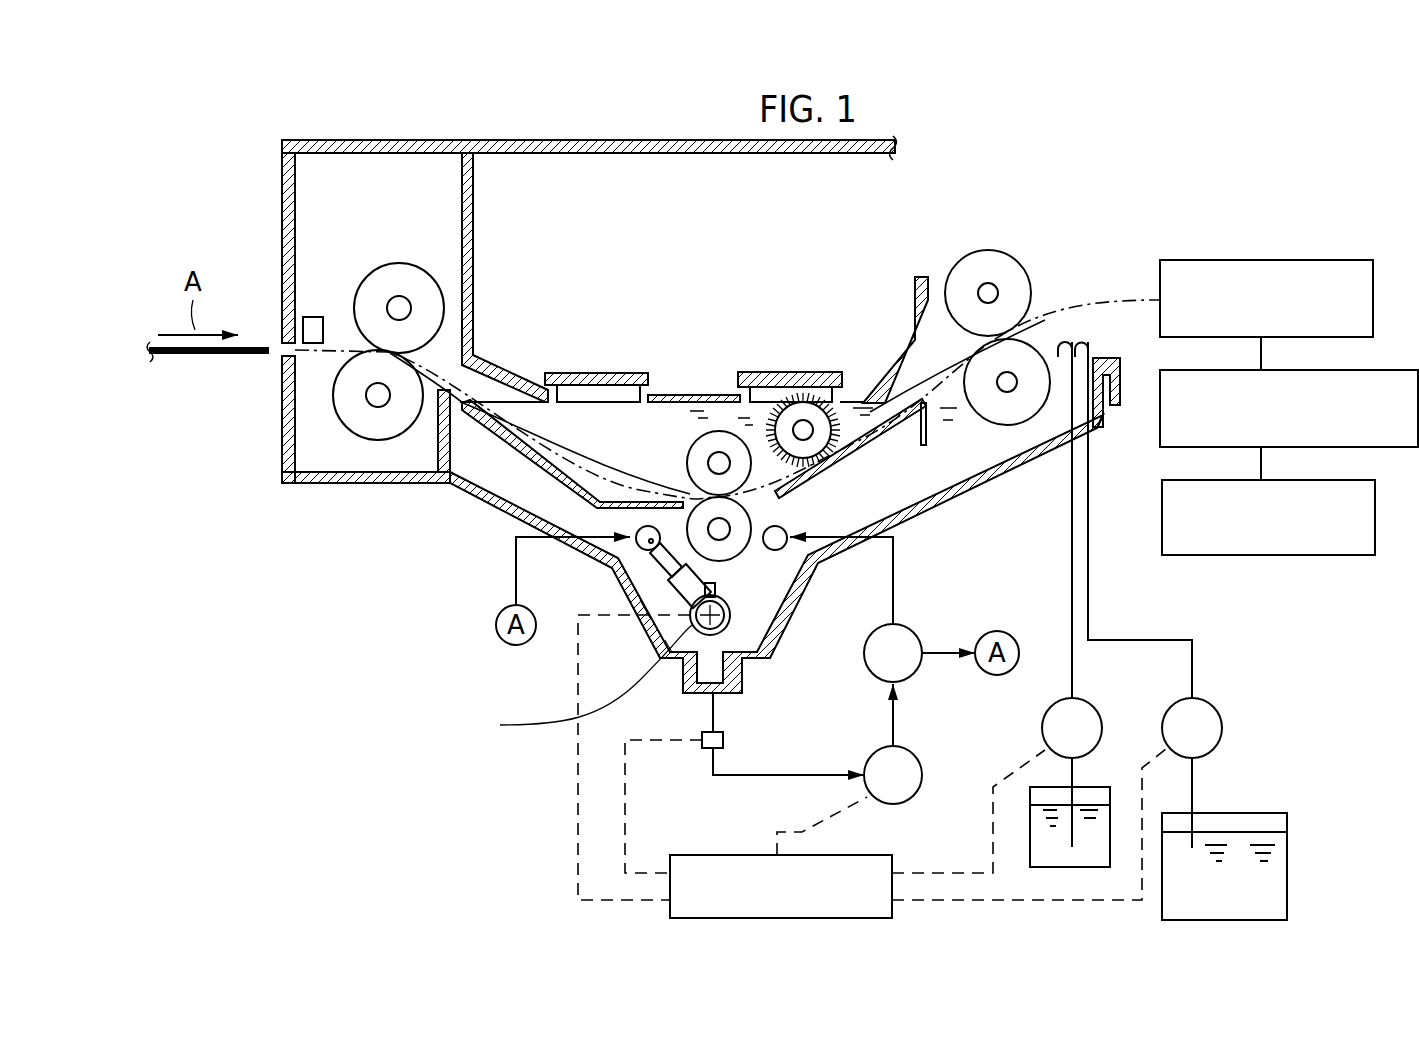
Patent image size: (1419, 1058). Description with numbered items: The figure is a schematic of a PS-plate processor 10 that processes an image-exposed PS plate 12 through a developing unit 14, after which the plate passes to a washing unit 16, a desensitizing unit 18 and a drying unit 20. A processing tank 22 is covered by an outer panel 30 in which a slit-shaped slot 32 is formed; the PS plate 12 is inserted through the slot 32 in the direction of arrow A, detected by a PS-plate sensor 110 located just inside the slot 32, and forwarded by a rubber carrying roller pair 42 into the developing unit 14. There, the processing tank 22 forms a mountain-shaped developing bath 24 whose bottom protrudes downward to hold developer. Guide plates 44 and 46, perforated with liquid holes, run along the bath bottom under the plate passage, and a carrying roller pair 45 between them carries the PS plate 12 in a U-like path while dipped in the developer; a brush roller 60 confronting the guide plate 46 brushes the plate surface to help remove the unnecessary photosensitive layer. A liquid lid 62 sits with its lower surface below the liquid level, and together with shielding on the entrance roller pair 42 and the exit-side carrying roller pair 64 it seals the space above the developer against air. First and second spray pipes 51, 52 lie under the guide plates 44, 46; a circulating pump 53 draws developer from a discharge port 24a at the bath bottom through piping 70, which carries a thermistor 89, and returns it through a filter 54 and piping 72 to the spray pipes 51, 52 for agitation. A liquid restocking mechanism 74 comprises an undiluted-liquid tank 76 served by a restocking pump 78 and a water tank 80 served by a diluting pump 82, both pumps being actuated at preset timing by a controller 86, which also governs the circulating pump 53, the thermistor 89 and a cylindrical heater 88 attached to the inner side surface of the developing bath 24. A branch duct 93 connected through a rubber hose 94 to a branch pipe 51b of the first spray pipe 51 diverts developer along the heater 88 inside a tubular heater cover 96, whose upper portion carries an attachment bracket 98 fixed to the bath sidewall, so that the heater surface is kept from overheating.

The PS-plate processor 10 is at (372, 625).
The PS plate 12 is at (207, 356).
The developing unit 14 is at (737, 478).
The washing unit 16 is at (1197, 260).
The desensitizing unit 18 is at (1390, 370).
The drying unit 20 is at (1358, 555).
The processing tank 22 is at (480, 505).
The developing bath 24 is at (1007, 469).
The discharge port 24a is at (717, 698).
The outer panel 30 is at (282, 222).
The slot 32 is at (282, 345).
The carrying roller pair 42 is at (402, 264).
The guide plate 44 is at (577, 470).
The carrying roller pair 45 is at (712, 431).
The guide plate 46 is at (872, 450).
The first spray pipe 51 is at (636, 542).
The branch pipe 51b is at (665, 563).
The second spray pipe 52 is at (779, 532).
The circulating pump 53 is at (917, 755).
The filter 54 is at (917, 632).
The brush roller 60 is at (803, 397).
The liquid lid 62 is at (588, 373).
The carrying roller pair 64 is at (988, 250).
The piping 70 is at (712, 716).
The piping 72 is at (516, 557).
The liquid restocking mechanism 74 is at (1222, 658).
The undiluted-liquid tank 76 is at (1108, 787).
The restocking pump 78 is at (1091, 713).
The water tank 80 is at (1263, 813).
The diluting pump 82 is at (1211, 713).
The controller 86 is at (704, 855).
The heater 88 is at (759, 605).
The thermistor 89 is at (723, 742).
The branch duct 93 is at (716, 588).
The rubber hose 94 is at (652, 614).
The heater cover 96 is at (579, 682).
The attachment bracket 98 is at (672, 646).
The PS-plate sensor 110 is at (314, 317).